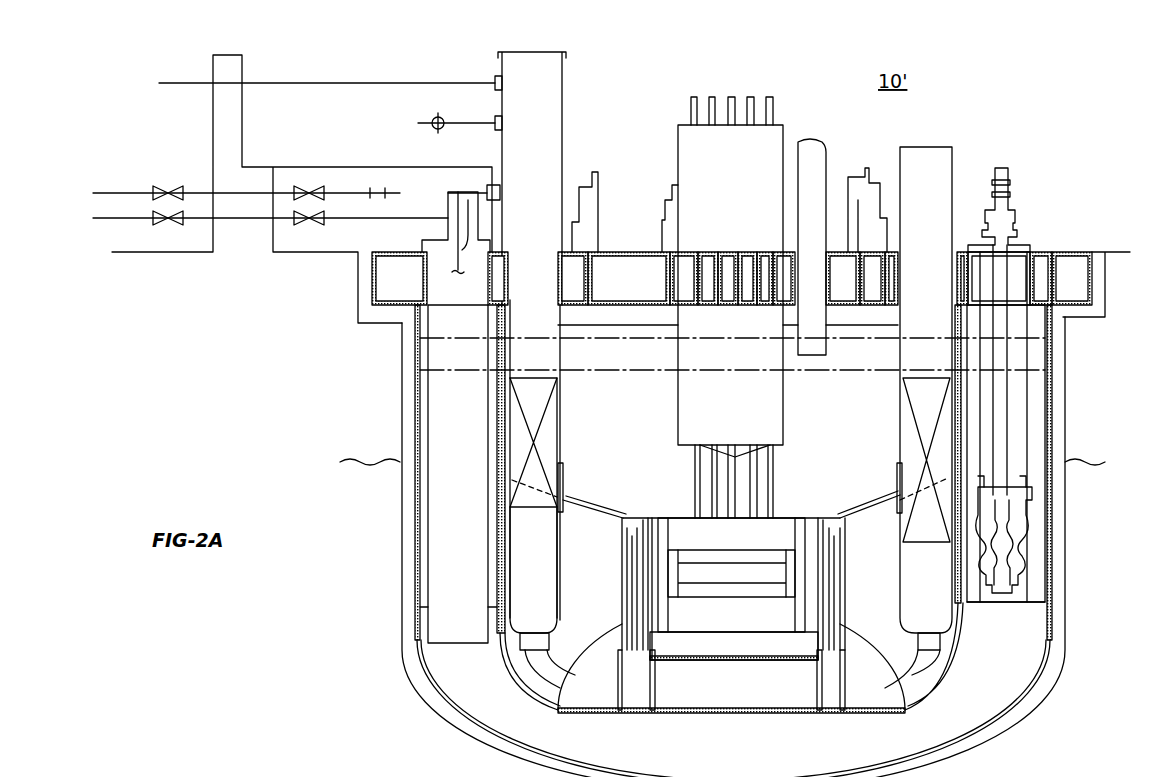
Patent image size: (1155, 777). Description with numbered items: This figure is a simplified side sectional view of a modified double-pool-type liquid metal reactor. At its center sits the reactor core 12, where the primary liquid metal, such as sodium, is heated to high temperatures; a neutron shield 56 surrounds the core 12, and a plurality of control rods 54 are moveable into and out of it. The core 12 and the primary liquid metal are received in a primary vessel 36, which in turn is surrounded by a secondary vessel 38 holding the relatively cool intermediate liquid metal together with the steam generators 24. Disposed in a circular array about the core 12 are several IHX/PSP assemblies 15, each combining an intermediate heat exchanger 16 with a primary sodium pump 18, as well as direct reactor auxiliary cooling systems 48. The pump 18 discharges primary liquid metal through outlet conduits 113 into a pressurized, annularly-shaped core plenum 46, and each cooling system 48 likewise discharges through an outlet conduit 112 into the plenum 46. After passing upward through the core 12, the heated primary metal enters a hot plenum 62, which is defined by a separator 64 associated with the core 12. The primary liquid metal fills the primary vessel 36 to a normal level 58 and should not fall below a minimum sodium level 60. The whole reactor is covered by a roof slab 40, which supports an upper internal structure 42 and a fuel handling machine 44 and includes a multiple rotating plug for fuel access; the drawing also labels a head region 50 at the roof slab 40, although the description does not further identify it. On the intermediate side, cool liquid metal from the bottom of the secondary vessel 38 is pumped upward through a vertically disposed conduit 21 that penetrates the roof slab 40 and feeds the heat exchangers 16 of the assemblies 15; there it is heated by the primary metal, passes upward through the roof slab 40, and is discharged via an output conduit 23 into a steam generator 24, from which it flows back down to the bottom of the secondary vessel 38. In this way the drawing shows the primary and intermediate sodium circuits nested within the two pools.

The reactor core 12 is at (731, 575).
The IHX/PSP assembly 15 is at (565, 100).
The intermediate heat exchanger 16 is at (567, 507).
The primary sodium pump 18 is at (567, 630).
The vertically disposed conduit 21 is at (1003, 430).
The output conduit 23 is at (478, 190).
The steam generator 24 is at (433, 415).
The primary vessel 36 is at (967, 625).
The secondary vessel 38 is at (1060, 630).
The roof slab 40 is at (1075, 250).
The upper internal structure 42 is at (678, 150).
The fuel handling machine 44 is at (822, 160).
The core plenum 46 is at (605, 703).
The direct reactor auxiliary cooling system 48 is at (955, 176).
The head insulation 50 is at (751, 262).
The control rods 54 is at (772, 482).
The neutron shield 56 is at (835, 575).
The normal level 58 is at (1040, 333).
The minimum sodium level 60 is at (1040, 360).
The hot plenum 62 is at (845, 405).
The separator 64 is at (866, 512).
The outlet conduit 112 is at (930, 662).
The outlet conduits 113 is at (552, 660).